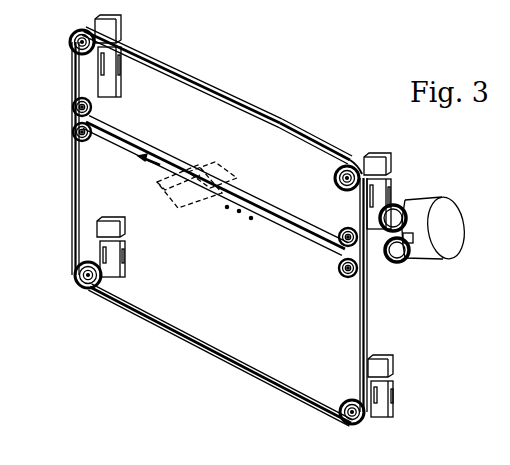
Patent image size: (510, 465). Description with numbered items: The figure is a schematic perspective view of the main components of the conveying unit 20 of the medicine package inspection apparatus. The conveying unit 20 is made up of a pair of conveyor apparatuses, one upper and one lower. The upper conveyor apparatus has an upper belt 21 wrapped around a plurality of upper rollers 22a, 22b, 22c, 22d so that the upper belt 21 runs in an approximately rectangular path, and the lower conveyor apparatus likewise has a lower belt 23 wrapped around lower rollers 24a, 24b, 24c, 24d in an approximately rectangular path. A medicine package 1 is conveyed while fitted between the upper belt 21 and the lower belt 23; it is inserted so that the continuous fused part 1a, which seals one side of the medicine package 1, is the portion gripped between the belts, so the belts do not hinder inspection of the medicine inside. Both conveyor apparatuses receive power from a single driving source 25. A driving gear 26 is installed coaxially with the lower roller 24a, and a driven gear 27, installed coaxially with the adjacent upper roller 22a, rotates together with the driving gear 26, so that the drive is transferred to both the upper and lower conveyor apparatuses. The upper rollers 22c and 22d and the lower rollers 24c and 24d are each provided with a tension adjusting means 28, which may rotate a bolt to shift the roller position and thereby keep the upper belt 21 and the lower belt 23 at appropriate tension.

The medicine package 1 is at (185, 209).
The continuous fused part 1a is at (231, 179).
The conveying unit 20 is at (322, 95).
The upper belt 21 is at (197, 81).
The lower belt 23 is at (173, 334).
The upper roller 22a is at (338, 232).
The upper roller 22b is at (72, 110).
The upper roller 22c is at (70, 43).
The upper roller 22d is at (334, 178).
The lower roller 24a is at (338, 272).
The lower roller 24b is at (72, 133).
The lower roller 24c is at (74, 277).
The lower roller 24d is at (341, 401).
The driving source 25 is at (448, 250).
The driving gear 26 is at (406, 262).
The driven gear 27 is at (405, 212).
The tension adjusting means 28 is at (121, 63).